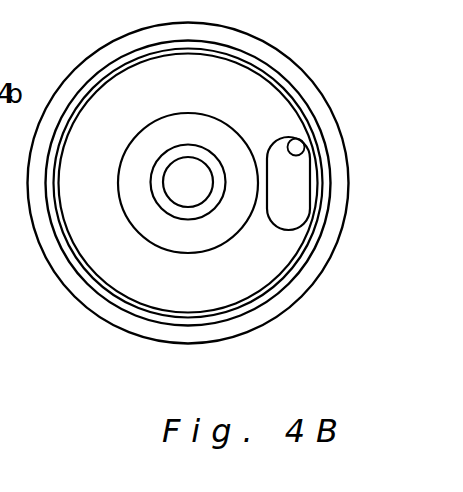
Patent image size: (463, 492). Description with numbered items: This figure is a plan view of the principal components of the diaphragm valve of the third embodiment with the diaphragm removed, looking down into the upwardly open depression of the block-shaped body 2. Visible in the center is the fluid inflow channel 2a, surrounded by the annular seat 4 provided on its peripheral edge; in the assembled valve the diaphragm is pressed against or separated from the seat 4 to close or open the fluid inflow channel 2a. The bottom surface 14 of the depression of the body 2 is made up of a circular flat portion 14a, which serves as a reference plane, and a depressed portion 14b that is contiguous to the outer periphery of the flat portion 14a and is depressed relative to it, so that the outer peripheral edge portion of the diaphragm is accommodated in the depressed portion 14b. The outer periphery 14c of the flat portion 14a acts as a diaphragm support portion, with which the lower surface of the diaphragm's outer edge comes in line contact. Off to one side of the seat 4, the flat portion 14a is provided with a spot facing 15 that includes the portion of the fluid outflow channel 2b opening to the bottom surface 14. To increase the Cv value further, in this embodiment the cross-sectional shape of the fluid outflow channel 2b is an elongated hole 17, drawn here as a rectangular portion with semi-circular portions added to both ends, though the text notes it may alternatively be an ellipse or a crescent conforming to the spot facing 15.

The body 2 is at (278, 317).
The fluid inflow channel 2a is at (190, 208).
The fluid outflow channel 2b is at (292, 156).
The annular seat 4 is at (198, 233).
The bottom surface 14 is at (167, 203).
The flat portion 14a is at (63, 233).
The depressed portion 14b is at (295, 276).
The outer periphery 14c is at (307, 250).
The spot facing 15 is at (232, 283).
The elongated hole 17 is at (290, 197).